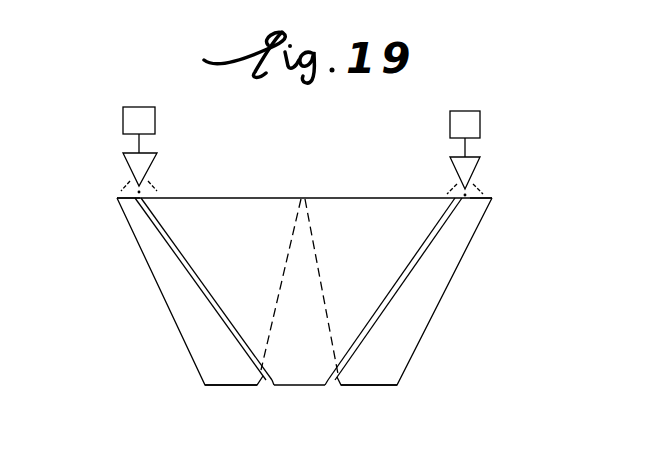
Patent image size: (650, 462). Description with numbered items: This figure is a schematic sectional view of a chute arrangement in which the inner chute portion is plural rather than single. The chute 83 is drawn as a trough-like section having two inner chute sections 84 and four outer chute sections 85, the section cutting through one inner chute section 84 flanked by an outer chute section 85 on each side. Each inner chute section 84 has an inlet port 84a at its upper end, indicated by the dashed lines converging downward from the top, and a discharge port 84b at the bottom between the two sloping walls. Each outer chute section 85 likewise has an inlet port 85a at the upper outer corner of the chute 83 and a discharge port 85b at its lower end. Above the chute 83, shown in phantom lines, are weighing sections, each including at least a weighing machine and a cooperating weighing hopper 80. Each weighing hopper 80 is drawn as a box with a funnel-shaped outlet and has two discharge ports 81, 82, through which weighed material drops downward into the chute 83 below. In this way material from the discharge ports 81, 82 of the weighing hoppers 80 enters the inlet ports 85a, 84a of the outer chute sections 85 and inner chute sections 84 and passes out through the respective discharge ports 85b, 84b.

The weighing hopper 80 is at (128, 152).
The discharge port 81 is at (145, 176).
The discharge port 82 is at (127, 175).
The chute 83 is at (120, 282).
The inner chute section 84 is at (207, 293).
The inlet port 84a is at (270, 213).
The discharge port 84b is at (300, 385).
The outer chute section 85 is at (140, 250).
The inlet port 85a is at (118, 196).
The discharge port 85b is at (230, 385).